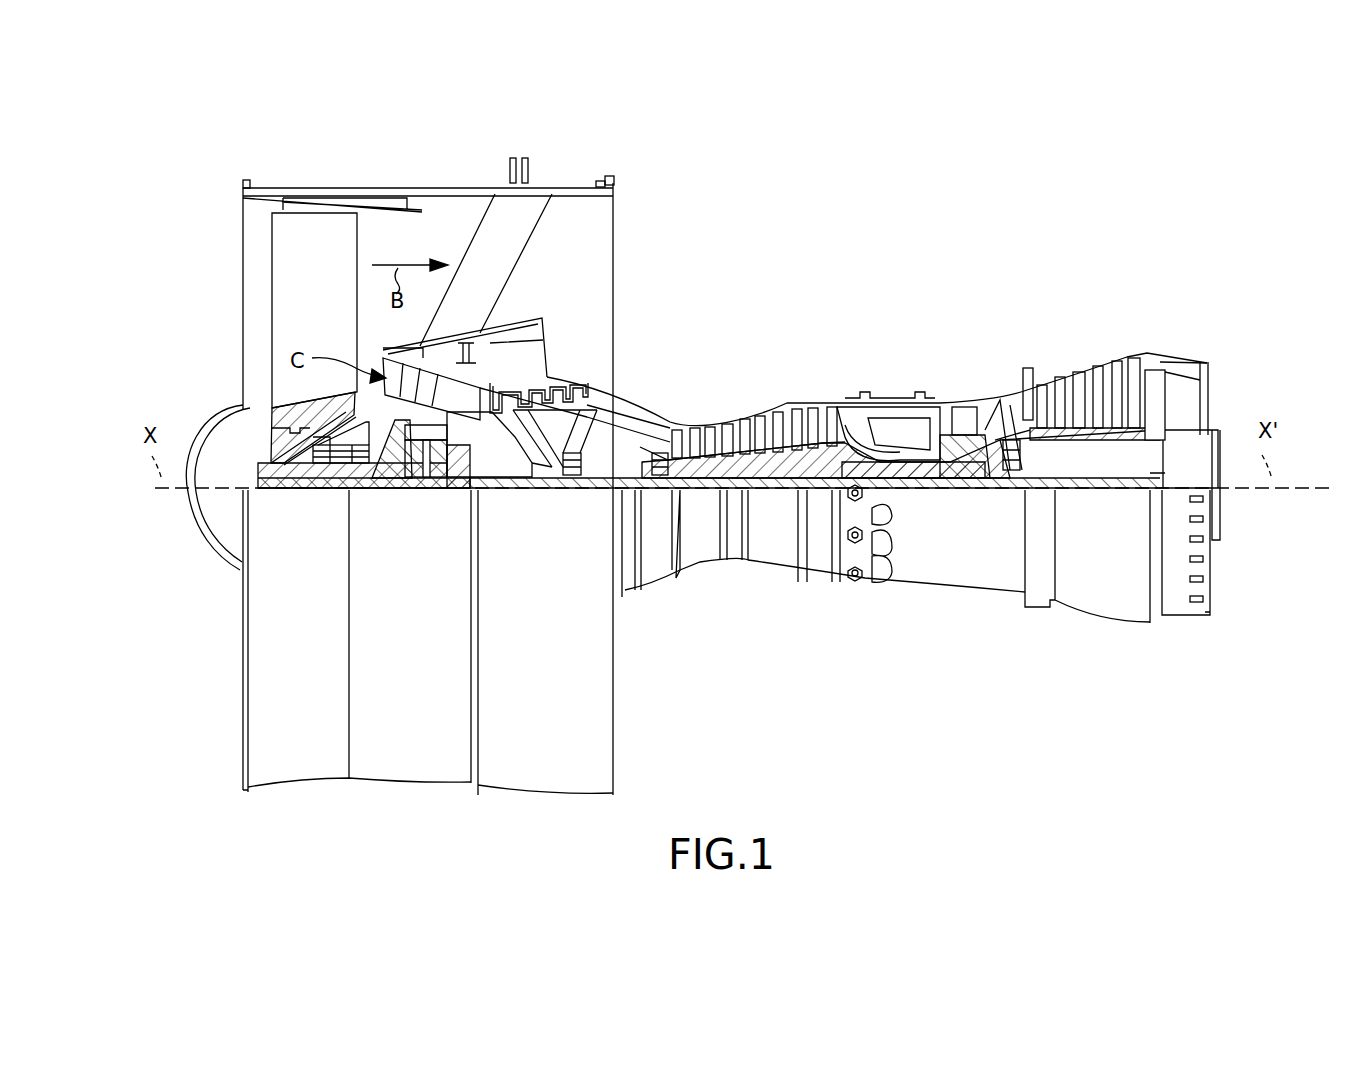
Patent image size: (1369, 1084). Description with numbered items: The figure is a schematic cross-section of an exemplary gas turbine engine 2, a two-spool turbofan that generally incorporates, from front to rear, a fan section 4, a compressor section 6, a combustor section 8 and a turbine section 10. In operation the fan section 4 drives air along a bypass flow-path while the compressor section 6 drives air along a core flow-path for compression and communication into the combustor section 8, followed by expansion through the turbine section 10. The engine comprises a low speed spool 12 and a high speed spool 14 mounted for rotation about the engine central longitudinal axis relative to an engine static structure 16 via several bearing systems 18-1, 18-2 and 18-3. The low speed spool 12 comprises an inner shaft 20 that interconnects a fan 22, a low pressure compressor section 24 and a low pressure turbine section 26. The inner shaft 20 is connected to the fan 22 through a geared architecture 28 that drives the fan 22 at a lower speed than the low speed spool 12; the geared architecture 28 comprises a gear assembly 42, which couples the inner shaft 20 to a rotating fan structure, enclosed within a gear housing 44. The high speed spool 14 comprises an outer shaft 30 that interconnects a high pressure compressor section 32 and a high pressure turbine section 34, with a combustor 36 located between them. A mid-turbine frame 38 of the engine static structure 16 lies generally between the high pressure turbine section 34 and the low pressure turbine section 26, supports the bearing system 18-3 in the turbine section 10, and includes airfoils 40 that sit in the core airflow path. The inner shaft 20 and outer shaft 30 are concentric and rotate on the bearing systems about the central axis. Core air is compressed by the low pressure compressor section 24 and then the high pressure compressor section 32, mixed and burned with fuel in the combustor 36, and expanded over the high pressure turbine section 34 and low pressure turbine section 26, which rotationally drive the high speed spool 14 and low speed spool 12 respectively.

The gas turbine engine 2 is at (930, 232).
The fan section 4 is at (470, 168).
The compressor section 6 is at (480, 292).
The combustor section 8 is at (946, 292).
The turbine section 10 is at (1150, 292).
The low speed spool 12 is at (780, 502).
The high speed spool 14 is at (810, 448).
The engine static structure 16 is at (392, 780).
The bearing system 18-1 is at (326, 482).
The bearing system 18-2 is at (574, 480).
The bearing system 18-3 is at (997, 480).
The inner shaft 20 is at (642, 528).
The fan 22 is at (314, 310).
The low pressure compressor section 24 is at (547, 388).
The low pressure turbine section 26 is at (1078, 370).
The geared architecture 28 is at (436, 500).
The outer shaft 30 is at (890, 472).
The high pressure compressor section 32 is at (755, 454).
The high pressure turbine section 34 is at (958, 408).
The combustor 36 is at (887, 428).
The mid-turbine frame 38 is at (1009, 406).
The airfoils 40 is at (1008, 416).
The gear assembly 42 is at (446, 461).
The gear housing 44 is at (446, 433).